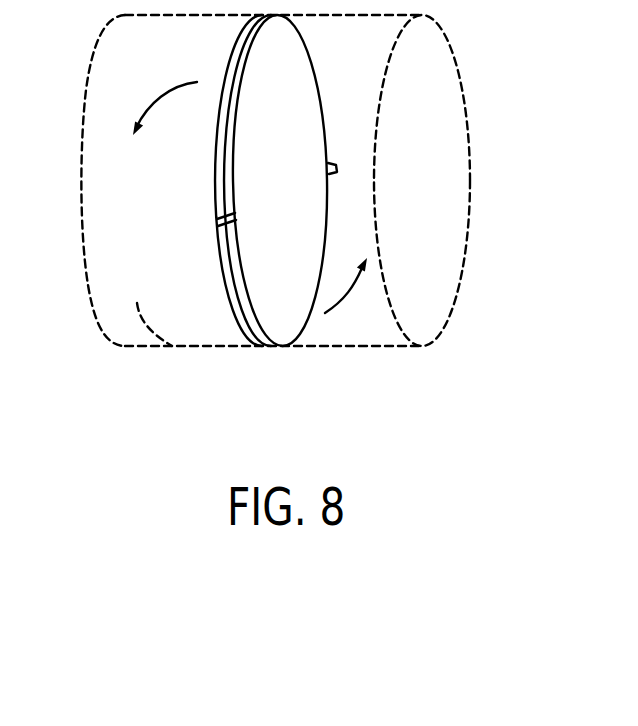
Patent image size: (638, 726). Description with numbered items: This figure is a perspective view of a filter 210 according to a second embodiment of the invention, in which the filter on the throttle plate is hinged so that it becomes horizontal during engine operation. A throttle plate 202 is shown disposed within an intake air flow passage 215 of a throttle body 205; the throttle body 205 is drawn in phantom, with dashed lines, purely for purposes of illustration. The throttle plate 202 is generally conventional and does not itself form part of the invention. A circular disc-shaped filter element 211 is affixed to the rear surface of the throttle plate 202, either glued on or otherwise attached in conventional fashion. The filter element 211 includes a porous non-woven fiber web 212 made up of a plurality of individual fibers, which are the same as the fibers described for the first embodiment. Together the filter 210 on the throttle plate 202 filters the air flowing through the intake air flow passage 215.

The throttle plate 202 is at (282, 87).
The throttle body 205 is at (166, 373).
The filter 210 is at (223, 180).
The filter element 211 is at (224, 80).
The porous non-woven fiber web 212 is at (228, 268).
The intake air flow passage 215 is at (146, 311).